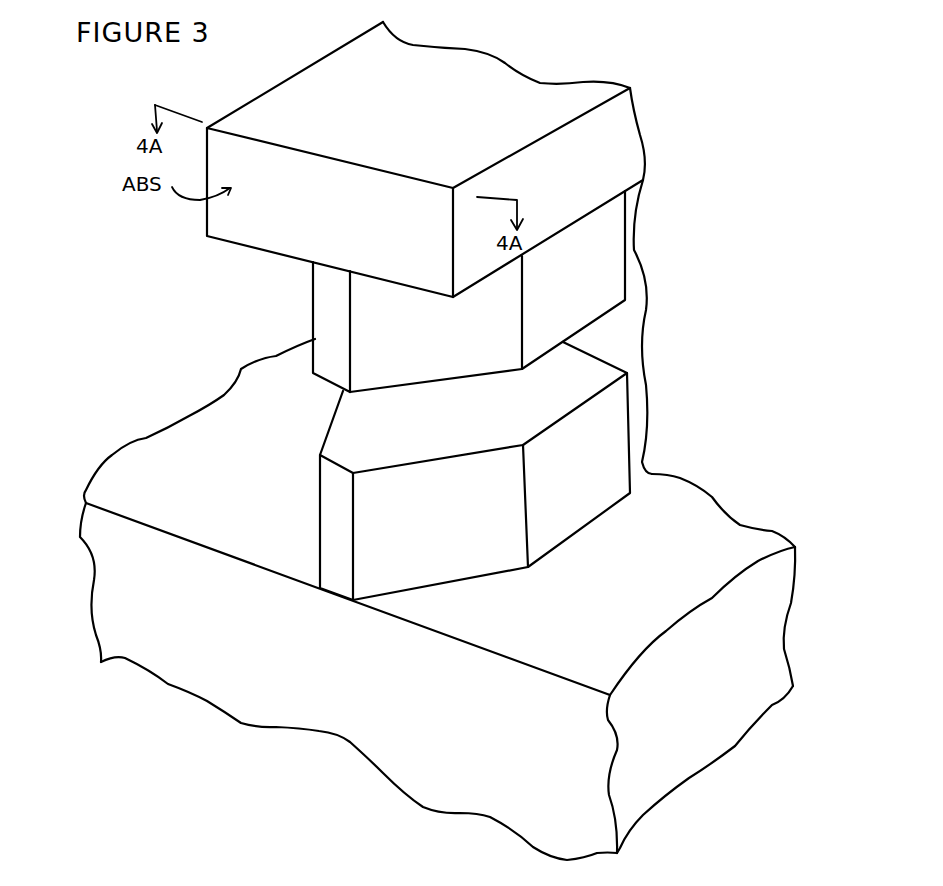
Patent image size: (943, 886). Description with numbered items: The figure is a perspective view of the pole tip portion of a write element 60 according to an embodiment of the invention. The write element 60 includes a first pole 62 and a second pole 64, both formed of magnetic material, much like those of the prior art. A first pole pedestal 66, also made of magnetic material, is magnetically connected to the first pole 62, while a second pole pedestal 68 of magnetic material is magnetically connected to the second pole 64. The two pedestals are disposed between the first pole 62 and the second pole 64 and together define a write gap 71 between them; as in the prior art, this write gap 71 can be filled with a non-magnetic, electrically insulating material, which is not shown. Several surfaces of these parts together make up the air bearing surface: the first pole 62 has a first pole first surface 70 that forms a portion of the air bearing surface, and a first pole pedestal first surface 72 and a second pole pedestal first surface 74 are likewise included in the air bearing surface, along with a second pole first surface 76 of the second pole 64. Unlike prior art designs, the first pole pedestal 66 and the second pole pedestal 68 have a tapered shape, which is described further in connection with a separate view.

The write element 60 is at (662, 57).
The first pole 62 is at (686, 765).
The second pole 64 is at (629, 142).
The first pole pedestal 66 is at (592, 502).
The second pole pedestal 68 is at (610, 262).
The first pole first surface 70 is at (439, 517).
The write gap 71 is at (320, 408).
The first pole pedestal first surface 72 is at (336, 527).
The second pole pedestal first surface 74 is at (331, 327).
The second pole first surface 76 is at (330, 212).